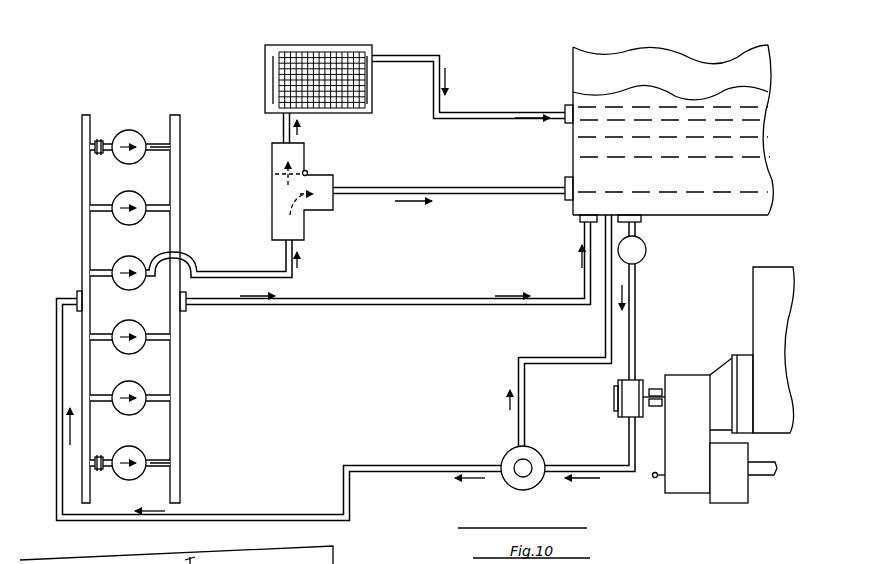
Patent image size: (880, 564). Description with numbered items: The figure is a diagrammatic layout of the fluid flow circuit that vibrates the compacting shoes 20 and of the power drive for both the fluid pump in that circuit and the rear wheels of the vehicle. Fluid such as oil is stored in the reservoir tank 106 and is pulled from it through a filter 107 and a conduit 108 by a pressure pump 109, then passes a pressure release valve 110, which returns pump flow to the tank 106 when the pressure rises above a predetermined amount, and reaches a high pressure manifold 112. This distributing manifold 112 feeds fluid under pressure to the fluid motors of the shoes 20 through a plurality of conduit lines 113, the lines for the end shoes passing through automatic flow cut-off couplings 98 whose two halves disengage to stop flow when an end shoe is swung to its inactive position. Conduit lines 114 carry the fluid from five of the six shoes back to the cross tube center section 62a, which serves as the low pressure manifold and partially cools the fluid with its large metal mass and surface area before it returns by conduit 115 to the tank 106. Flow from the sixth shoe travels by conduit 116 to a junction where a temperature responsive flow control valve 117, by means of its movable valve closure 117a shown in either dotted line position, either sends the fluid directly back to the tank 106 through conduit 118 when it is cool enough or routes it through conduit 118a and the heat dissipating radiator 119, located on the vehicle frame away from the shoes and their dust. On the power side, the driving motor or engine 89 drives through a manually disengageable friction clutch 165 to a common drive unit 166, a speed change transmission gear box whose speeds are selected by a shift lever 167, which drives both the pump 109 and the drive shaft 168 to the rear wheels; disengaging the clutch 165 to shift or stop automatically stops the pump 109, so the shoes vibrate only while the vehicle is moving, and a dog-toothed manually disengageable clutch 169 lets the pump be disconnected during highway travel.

The shoe 20 is at (140, 260).
The cross tube center section 62a is at (181, 363).
The driving motor or engine 89 is at (754, 283).
The automatic flow cut-off coupling 98 is at (102, 141).
The reservoir tank 106 is at (756, 215).
The filter 107 is at (647, 250).
The conduit 108 is at (414, 478).
The pressure pump 109 is at (616, 398).
The pressure release valve 110 is at (511, 484).
The high pressure manifold 112 is at (82, 238).
The conduit lines 113 is at (103, 269).
The conduit lines 114 is at (156, 143).
The conduit 115 is at (402, 298).
The conduit 116 is at (224, 277).
The flow control valve 117 is at (304, 153).
The movable valve closure 117a is at (276, 181).
The conduit 118 is at (493, 187).
The conduit 118a is at (283, 127).
The heat dissipating radiator 119 is at (325, 45).
The manually disengageable clutch 165 is at (737, 355).
The common drive unit 166 is at (665, 446).
The shift lever 167 is at (652, 478).
The drive shaft 168 is at (774, 476).
The manually disengageable clutch 169 is at (655, 385).